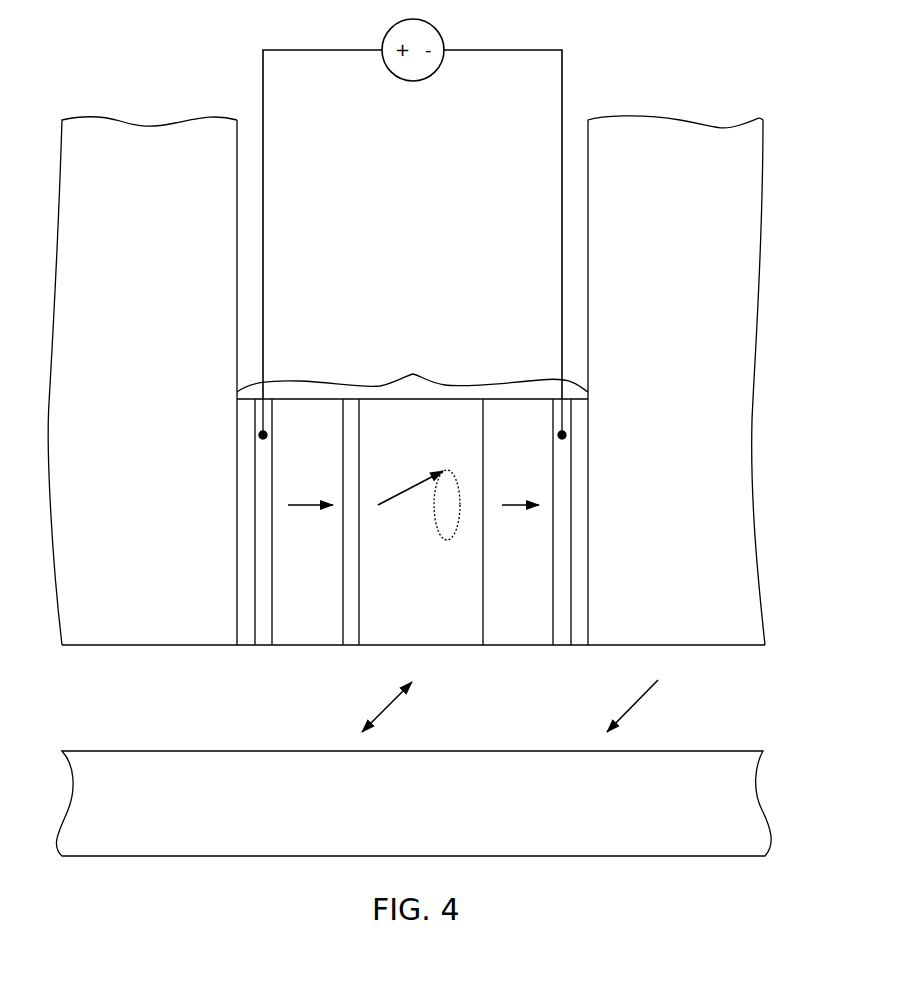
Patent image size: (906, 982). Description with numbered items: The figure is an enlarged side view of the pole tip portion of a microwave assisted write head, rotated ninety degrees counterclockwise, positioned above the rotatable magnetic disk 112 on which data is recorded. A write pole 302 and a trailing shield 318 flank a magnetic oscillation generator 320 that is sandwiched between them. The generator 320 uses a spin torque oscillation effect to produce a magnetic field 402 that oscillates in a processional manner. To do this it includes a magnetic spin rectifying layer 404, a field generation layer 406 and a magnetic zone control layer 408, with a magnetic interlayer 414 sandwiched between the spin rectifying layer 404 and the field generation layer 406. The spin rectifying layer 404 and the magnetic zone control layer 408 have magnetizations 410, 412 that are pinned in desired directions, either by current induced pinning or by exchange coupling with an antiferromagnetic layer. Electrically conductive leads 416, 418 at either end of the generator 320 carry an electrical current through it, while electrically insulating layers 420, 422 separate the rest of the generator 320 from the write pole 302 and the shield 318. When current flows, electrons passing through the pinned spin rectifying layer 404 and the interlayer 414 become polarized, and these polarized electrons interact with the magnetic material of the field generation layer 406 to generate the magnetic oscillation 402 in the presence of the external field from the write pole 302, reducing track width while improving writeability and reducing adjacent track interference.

The trailing shield 318 is at (160, 401).
The write pole 302 is at (705, 400).
The magnetic disk 112 is at (480, 801).
The magnetic oscillation generator 320 is at (512, 378).
The magnetic field 402 is at (425, 480).
The magnetic spin rectifying layer 404 is at (307, 592).
The field generation layer 406 is at (404, 618).
The magnetic zone control layer 408 is at (518, 556).
The magnetization 410 is at (288, 505).
The magnetization 412 is at (502, 505).
The magnetic interlayer 414 is at (352, 628).
The electrically conductive lead 416 is at (263, 572).
The electrically conductive lead 418 is at (562, 576).
The electrically insulating layer 420 is at (245, 546).
The electrically insulating layer 422 is at (578, 601).